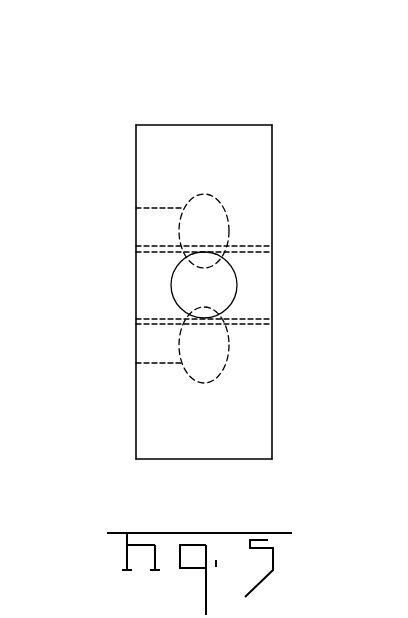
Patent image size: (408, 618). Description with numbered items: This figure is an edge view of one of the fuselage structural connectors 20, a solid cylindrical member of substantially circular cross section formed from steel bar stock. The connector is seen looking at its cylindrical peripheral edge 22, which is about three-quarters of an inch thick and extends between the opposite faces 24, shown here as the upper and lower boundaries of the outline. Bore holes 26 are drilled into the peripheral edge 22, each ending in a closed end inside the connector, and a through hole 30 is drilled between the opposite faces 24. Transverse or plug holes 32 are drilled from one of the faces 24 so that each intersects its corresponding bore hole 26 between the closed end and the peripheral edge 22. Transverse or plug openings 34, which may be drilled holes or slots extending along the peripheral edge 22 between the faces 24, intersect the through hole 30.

The fuselage structural connector 20 is at (266, 106).
The cylindrical peripheral edge 22 is at (205, 125).
The opposite faces 24 is at (136, 160).
The bore holes 26 is at (213, 229).
The through holes 30 is at (220, 294).
The transverse or plug holes 32 is at (157, 233).
The transverse or plug openings 34 is at (155, 290).